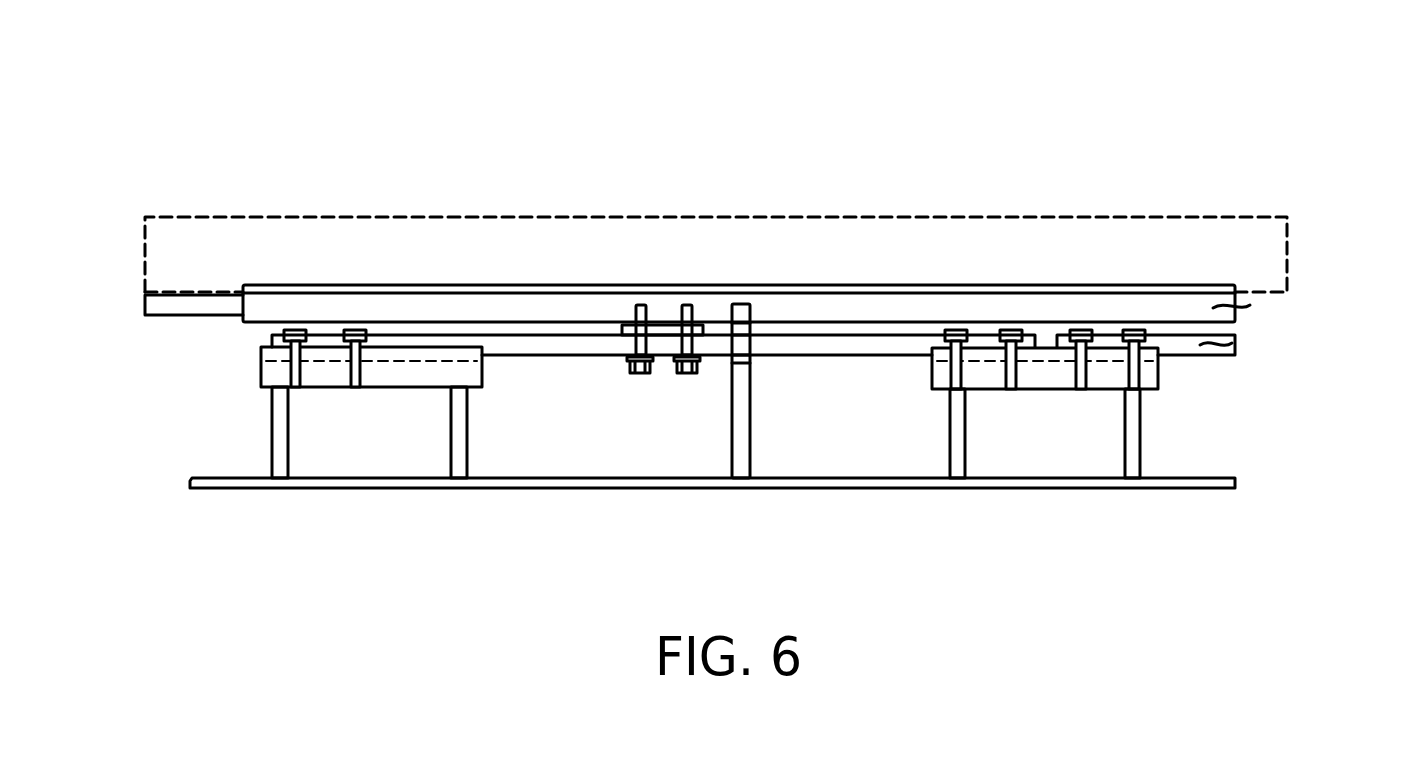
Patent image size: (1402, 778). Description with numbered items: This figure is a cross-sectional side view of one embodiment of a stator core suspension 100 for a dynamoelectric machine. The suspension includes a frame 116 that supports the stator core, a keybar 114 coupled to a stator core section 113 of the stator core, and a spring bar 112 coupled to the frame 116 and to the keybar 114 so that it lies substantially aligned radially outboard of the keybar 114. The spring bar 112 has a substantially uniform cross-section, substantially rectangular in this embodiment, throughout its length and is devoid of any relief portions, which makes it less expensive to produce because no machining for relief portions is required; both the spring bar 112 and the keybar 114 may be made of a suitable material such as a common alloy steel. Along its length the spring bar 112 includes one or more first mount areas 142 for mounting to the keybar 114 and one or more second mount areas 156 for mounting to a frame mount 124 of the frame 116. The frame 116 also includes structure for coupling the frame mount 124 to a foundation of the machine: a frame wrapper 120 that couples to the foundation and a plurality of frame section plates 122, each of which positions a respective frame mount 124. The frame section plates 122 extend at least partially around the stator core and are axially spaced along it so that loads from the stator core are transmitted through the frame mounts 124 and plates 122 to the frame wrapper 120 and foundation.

The stator core suspension 100 is at (320, 125).
The stator core section 113 is at (1247, 252).
The keybar 114 is at (1218, 311).
The spring bar 112 is at (1197, 346).
The frame mount 124 is at (273, 373).
The frame section plate 122 is at (283, 437).
The frame wrapper 120 is at (193, 492).
The frame 116 is at (228, 418).
The first mount area 142 is at (664, 388).
The second mount area 156 is at (367, 420).